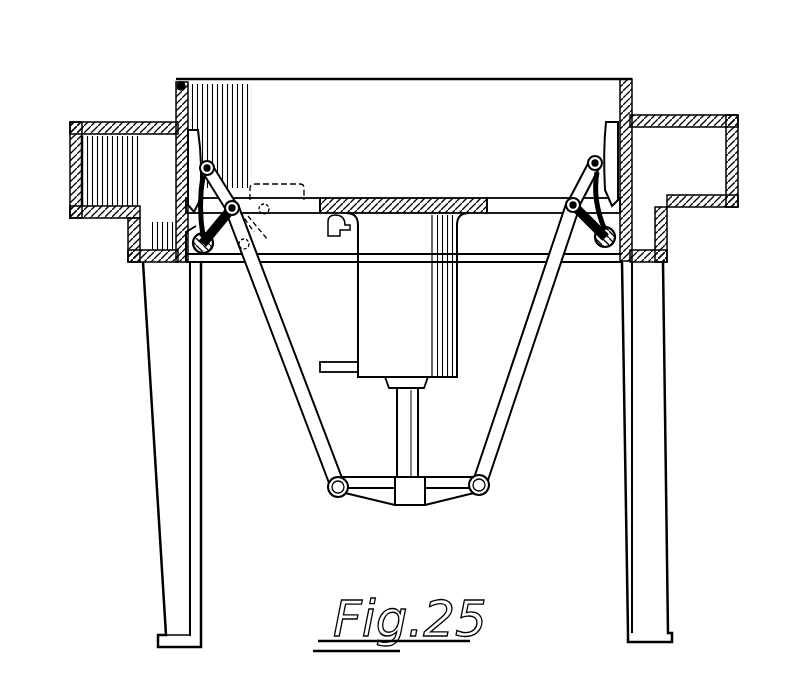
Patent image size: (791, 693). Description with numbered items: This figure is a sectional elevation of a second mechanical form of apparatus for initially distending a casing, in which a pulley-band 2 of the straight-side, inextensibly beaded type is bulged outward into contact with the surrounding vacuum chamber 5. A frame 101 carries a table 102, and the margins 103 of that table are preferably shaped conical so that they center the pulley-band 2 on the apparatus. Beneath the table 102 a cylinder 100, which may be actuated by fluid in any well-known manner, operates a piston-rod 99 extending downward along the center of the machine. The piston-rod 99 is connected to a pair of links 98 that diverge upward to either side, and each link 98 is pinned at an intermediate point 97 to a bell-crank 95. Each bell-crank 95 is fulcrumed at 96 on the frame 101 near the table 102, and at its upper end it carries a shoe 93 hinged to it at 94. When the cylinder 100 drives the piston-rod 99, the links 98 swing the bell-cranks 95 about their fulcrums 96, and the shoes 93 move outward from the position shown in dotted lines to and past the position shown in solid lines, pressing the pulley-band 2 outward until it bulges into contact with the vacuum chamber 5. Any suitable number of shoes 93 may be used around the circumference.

The pulley-band 2 is at (177, 104).
The vacuum chamber 5 is at (73, 214).
The shoes 93 is at (193, 151).
The hinge 94 is at (214, 168).
The bell-cranks 95 is at (256, 190).
The fulcrum 96 is at (222, 262).
The intermediate pin 97 is at (250, 235).
The links 98 is at (522, 380).
The piston-rod 99 is at (410, 452).
The cylinder 100 is at (455, 314).
The frame 101 is at (478, 254).
The table 102 is at (414, 198).
The margins 103 is at (221, 262).